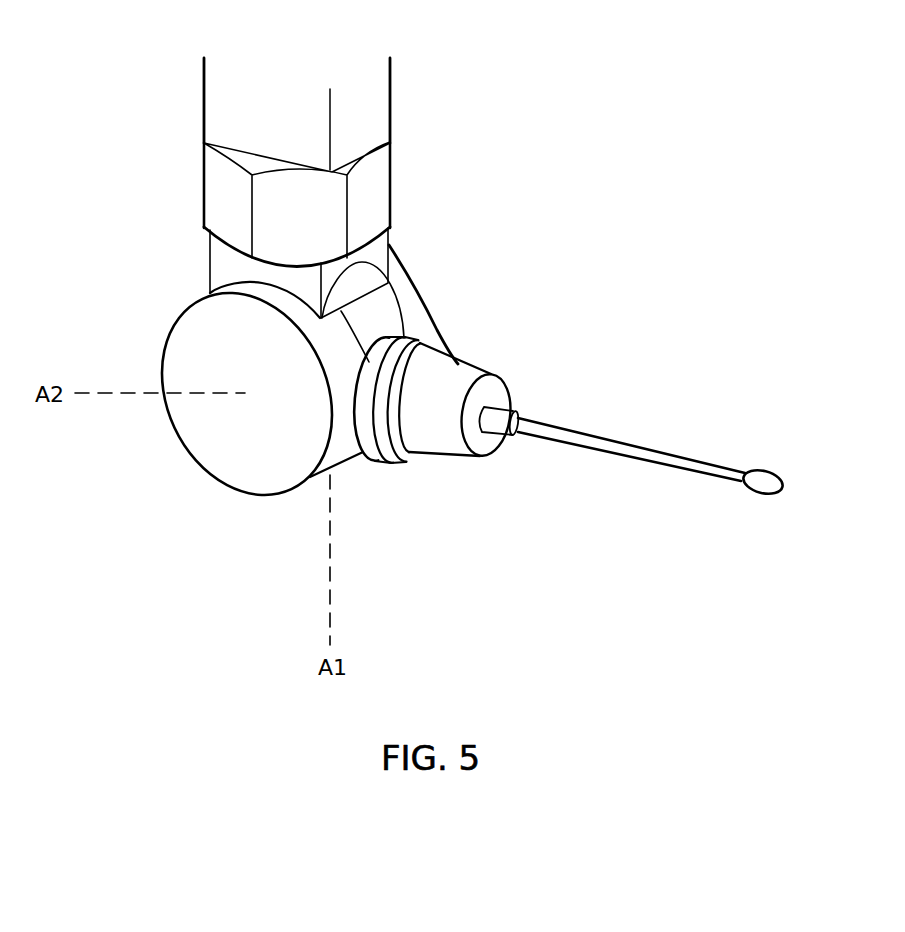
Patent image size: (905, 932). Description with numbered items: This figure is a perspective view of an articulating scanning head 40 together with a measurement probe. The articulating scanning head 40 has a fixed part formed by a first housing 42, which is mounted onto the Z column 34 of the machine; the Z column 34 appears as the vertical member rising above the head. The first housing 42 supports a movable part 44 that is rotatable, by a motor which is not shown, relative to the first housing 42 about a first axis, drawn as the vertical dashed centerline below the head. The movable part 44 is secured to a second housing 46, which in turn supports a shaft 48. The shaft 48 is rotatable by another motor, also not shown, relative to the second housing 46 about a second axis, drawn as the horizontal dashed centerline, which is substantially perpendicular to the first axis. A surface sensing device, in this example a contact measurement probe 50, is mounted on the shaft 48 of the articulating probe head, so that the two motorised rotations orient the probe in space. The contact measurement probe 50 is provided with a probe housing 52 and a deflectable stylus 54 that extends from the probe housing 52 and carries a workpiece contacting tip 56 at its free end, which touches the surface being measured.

The Z column 34 is at (377, 102).
The articulating scanning head 40 is at (557, 237).
The first housing 42 is at (377, 195).
The movable part 44 is at (367, 273).
The second housing 46 is at (205, 428).
The shaft 48 is at (368, 438).
The contact measurement probe 50 is at (601, 403).
The probe housing 52 is at (465, 377).
The deflectable stylus 54 is at (627, 442).
The workpiece contacting tip 56 is at (760, 477).